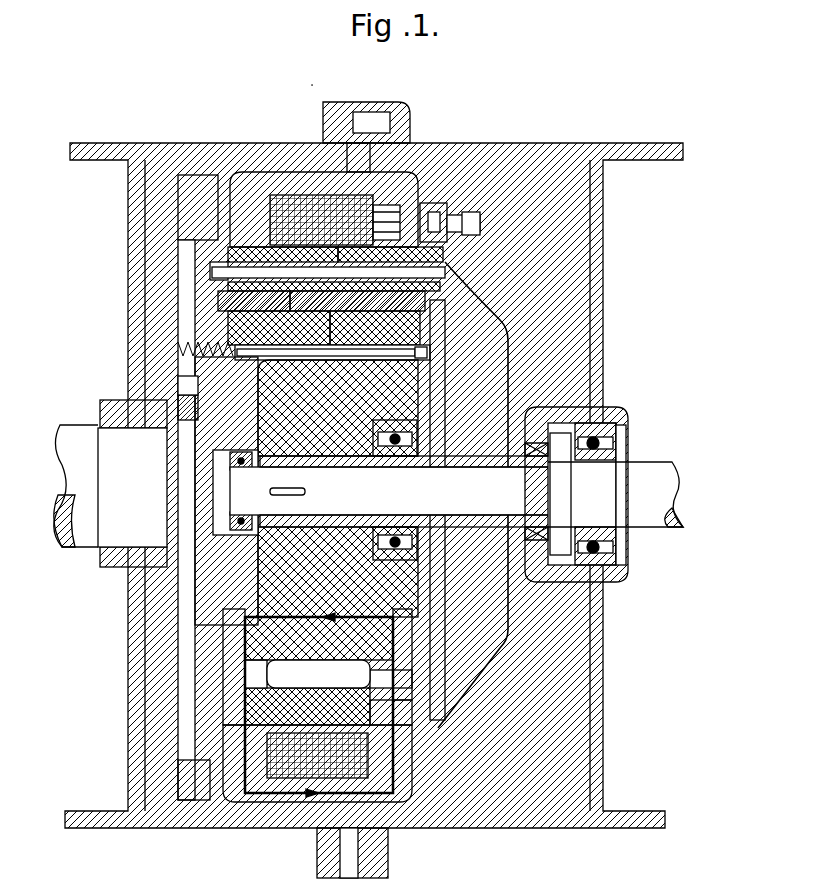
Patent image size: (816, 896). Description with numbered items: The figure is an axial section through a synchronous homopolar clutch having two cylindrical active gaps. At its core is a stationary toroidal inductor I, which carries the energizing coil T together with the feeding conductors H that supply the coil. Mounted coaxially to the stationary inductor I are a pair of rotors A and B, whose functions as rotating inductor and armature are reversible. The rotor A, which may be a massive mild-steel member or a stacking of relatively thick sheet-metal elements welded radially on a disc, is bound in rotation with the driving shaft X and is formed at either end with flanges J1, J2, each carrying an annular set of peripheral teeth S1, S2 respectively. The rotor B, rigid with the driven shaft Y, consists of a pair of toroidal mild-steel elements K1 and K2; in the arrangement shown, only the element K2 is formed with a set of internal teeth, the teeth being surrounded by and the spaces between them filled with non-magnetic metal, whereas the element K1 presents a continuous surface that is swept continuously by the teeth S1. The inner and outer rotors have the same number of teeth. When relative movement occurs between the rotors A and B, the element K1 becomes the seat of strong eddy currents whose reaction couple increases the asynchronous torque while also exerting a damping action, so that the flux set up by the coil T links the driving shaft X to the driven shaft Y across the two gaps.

The energizing coil T is at (275, 205).
The stationary toroidal inductor I is at (297, 255).
The rotor B is at (313, 262).
The toroidal mild-steel element K1 is at (110, 735).
The toroidal mild-steel element K2 is at (498, 758).
The feeding conductors H is at (448, 243).
The peripheral teeth S1 is at (233, 300).
The peripheral teeth S2 is at (445, 310).
The flange J1 is at (279, 328).
The flange J2 is at (375, 328).
The rotor A is at (430, 355).
The driving shaft X is at (110, 483).
The driven shaft Y is at (604, 494).